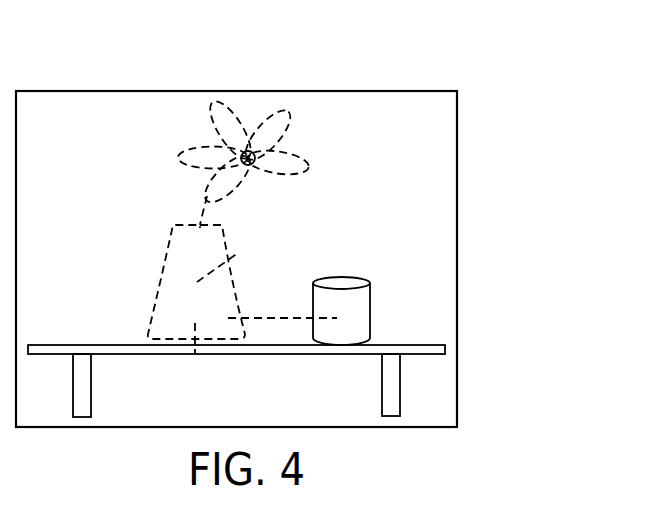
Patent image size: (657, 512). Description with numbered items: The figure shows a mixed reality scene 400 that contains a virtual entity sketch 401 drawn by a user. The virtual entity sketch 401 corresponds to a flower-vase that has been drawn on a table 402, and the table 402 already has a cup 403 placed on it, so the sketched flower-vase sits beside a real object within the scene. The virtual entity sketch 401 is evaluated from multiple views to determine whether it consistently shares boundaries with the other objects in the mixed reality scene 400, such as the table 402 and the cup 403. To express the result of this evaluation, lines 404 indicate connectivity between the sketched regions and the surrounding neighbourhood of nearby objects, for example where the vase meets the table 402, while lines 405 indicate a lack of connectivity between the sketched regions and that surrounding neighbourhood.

The mixed reality scene 400 is at (565, 112).
The virtual entity sketch 401 is at (225, 100).
The table 402 is at (413, 357).
The cup 403 is at (360, 307).
The lines 404 is at (236, 256).
The lines 405 is at (263, 318).